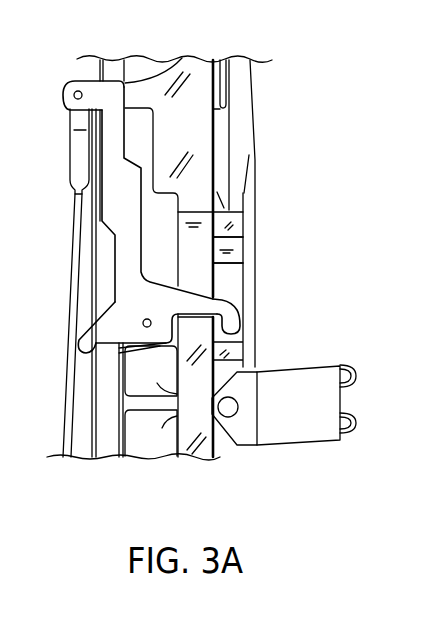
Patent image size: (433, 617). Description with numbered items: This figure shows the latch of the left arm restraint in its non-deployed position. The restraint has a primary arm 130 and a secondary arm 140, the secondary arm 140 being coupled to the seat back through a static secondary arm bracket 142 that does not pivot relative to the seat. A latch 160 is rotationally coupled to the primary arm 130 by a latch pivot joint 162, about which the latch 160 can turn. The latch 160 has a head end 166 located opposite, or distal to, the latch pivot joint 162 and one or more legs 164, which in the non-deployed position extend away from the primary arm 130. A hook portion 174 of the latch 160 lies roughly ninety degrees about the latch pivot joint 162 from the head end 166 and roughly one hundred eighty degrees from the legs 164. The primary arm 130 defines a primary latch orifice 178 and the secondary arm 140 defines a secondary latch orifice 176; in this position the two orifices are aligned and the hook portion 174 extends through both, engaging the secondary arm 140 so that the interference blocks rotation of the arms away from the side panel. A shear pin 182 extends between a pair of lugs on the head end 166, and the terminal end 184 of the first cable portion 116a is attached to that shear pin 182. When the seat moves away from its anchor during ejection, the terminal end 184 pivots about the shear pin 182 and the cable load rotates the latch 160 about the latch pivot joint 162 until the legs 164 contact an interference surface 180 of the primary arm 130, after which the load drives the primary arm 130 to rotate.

The primary arm 130 is at (190, 60).
The secondary arm 140 is at (242, 133).
The secondary arm bracket 142 is at (320, 378).
The latch 160 is at (128, 163).
The latch pivot joint 162 is at (147, 319).
The leg 164 is at (82, 338).
The head end 166 is at (84, 83).
The hook portion 174 is at (242, 322).
The secondary latch orifice 176 is at (246, 249).
The primary latch orifice 178 is at (225, 271).
The interference surface 180 is at (176, 352).
The shear pin 182 is at (74, 96).
The terminal end 184 is at (80, 147).
The first cable portion 116a is at (75, 278).